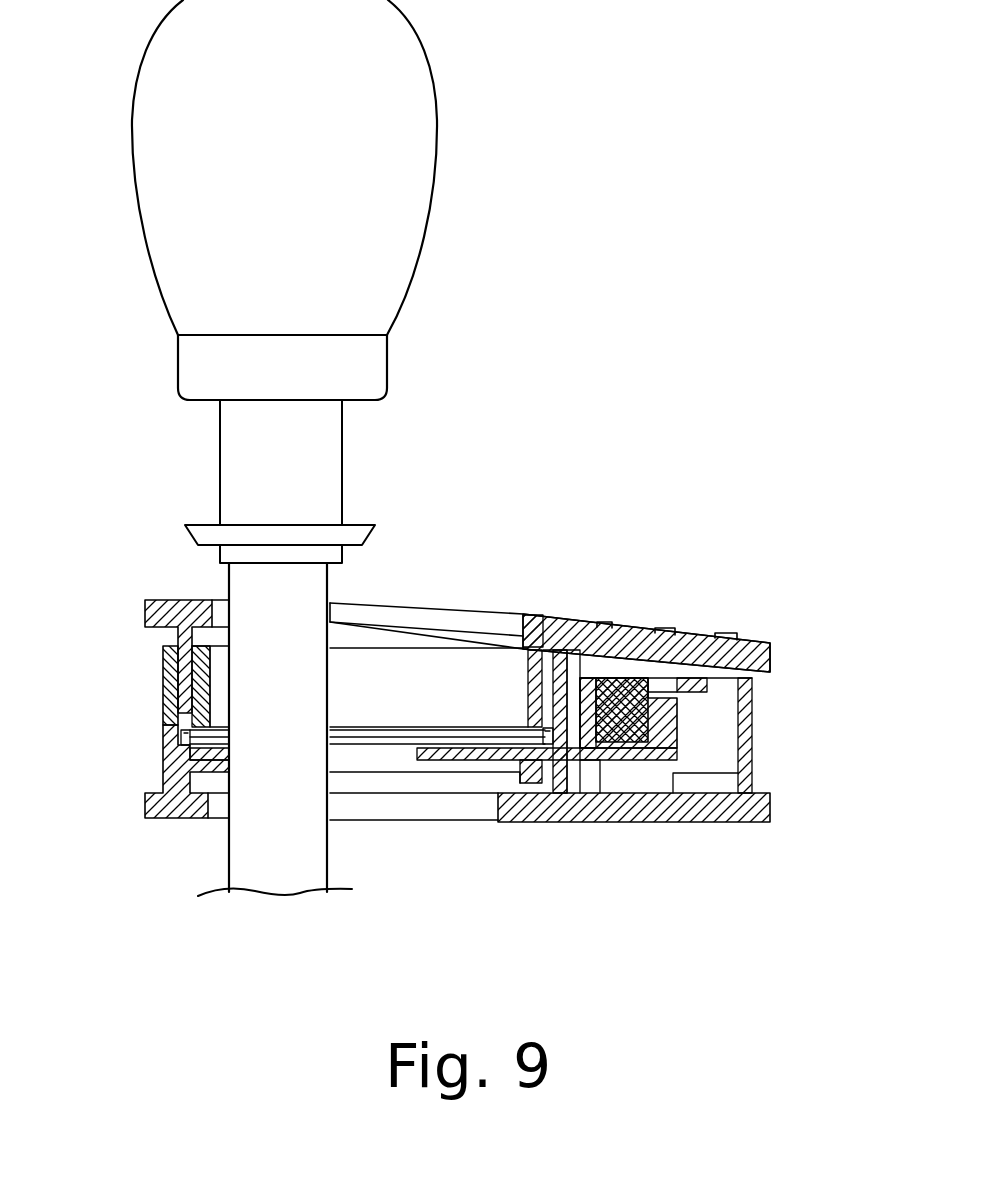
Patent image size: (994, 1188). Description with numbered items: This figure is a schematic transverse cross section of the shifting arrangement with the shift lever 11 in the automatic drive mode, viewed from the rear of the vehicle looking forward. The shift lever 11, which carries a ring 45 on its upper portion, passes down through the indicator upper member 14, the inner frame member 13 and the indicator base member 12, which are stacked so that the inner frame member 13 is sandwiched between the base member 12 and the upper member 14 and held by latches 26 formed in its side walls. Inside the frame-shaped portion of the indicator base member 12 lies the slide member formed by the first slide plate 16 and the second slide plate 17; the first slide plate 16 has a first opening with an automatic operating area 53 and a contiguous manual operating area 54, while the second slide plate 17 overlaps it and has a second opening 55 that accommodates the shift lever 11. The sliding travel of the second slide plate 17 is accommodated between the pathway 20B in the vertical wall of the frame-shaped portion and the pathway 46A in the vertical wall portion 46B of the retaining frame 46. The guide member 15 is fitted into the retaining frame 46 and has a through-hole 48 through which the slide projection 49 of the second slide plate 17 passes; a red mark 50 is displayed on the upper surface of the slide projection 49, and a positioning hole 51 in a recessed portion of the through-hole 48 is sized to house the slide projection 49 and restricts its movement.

The shift lever 11 is at (293, 868).
The indicator base member 12 is at (172, 822).
The inner frame member 13 is at (163, 696).
The indicator upper member 14 is at (160, 598).
The guide member 15 is at (628, 695).
The first slide plate 16 is at (520, 790).
The second slide plate 17 is at (445, 750).
The pathway 20B is at (527, 680).
The latches 26 is at (574, 655).
The ring 45 is at (366, 370).
The retaining frame 46 is at (757, 640).
The pathway 46A is at (590, 773).
The vertical wall portion 46B is at (602, 676).
The through-hole 48 is at (693, 693).
The slide projection 49 is at (667, 753).
The red mark 50 is at (683, 676).
The positioning hole 51 is at (752, 690).
The automatic operating area 53 is at (212, 740).
The manual operating area 54 is at (483, 738).
The second opening 55 is at (405, 760).